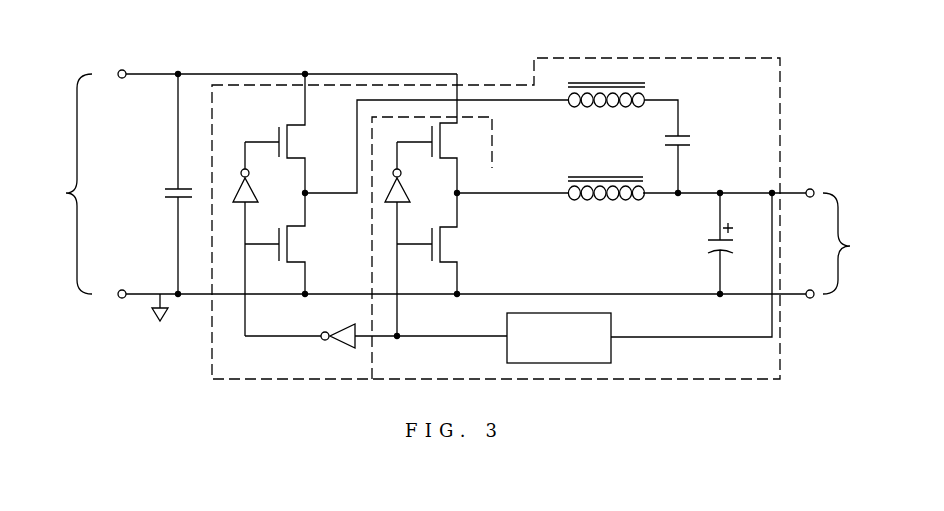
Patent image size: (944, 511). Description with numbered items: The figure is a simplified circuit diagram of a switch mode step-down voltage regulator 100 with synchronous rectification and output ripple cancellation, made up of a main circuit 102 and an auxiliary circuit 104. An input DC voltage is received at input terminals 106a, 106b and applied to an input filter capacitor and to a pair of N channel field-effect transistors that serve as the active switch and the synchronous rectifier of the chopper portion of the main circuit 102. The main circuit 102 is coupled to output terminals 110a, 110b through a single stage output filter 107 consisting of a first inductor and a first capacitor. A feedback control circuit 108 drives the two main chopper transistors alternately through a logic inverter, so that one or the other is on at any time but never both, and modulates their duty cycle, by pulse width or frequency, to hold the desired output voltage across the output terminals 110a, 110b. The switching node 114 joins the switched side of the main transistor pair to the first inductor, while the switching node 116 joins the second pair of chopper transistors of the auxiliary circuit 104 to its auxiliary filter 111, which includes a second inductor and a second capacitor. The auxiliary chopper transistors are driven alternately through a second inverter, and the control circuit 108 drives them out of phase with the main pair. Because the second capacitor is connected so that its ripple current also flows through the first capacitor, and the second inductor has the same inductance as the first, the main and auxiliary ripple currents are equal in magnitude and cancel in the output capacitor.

The switch mode step-down voltage regulator 100 is at (195, 43).
The main circuit 102 is at (700, 384).
The auxiliary circuit 104 is at (318, 386).
The input terminal 106a is at (118, 62).
The input terminal 106b is at (118, 306).
The single stage output filter 107 is at (648, 240).
The control circuit 108 is at (618, 350).
The output terminal 110a is at (816, 183).
The output terminal 110b is at (816, 304).
The auxiliary filter 111 is at (670, 87).
The switching node of first half bridge 114 is at (459, 196).
The switching node of second half bridge 116 is at (307, 197).